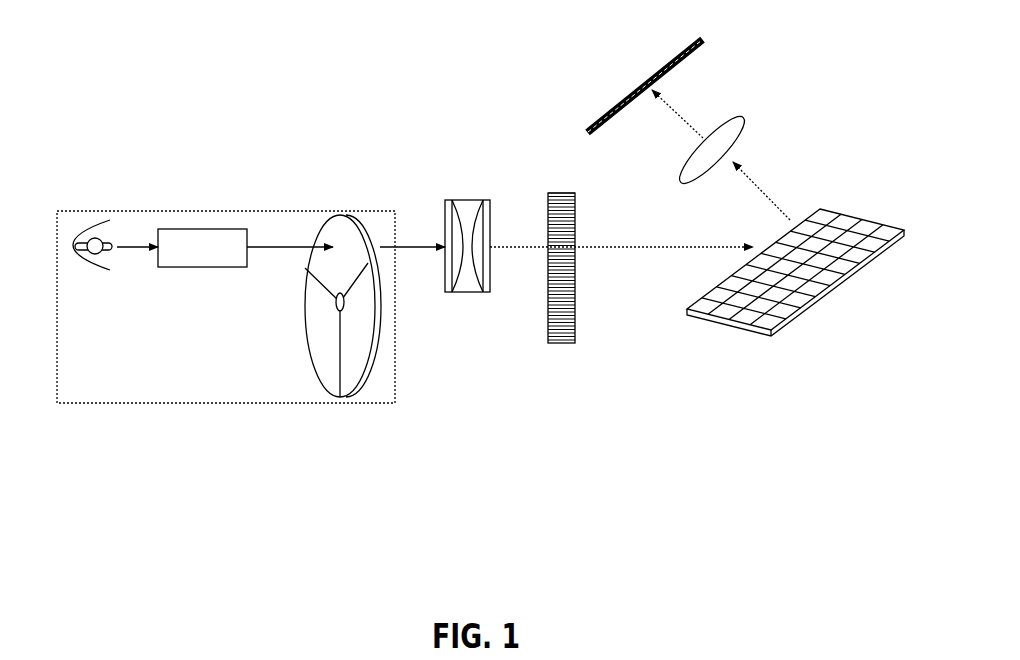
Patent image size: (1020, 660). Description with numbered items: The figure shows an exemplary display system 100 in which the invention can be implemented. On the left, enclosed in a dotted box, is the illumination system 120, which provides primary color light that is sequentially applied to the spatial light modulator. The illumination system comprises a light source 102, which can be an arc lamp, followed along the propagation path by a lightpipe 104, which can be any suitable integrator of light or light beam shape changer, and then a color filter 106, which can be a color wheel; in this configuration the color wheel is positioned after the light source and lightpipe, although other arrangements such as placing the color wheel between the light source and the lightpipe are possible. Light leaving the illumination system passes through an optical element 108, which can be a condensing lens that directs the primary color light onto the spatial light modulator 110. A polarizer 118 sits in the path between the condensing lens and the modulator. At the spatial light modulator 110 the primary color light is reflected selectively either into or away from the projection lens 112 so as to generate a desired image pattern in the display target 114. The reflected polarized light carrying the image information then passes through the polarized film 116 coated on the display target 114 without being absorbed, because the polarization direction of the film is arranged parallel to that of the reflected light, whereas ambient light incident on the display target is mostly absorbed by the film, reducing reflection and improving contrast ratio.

The display system 100 is at (351, 122).
The light source 102 is at (86, 217).
The lightpipe 104 is at (203, 229).
The color filter 106 is at (348, 215).
The optical element 108 is at (467, 197).
The spatial light modulator 110 is at (833, 205).
The projection lens 112 is at (741, 116).
The display target 114 is at (669, 73).
The polarized film 116 is at (683, 54).
The polarizer 118 is at (578, 222).
The illumination system 120 is at (225, 405).